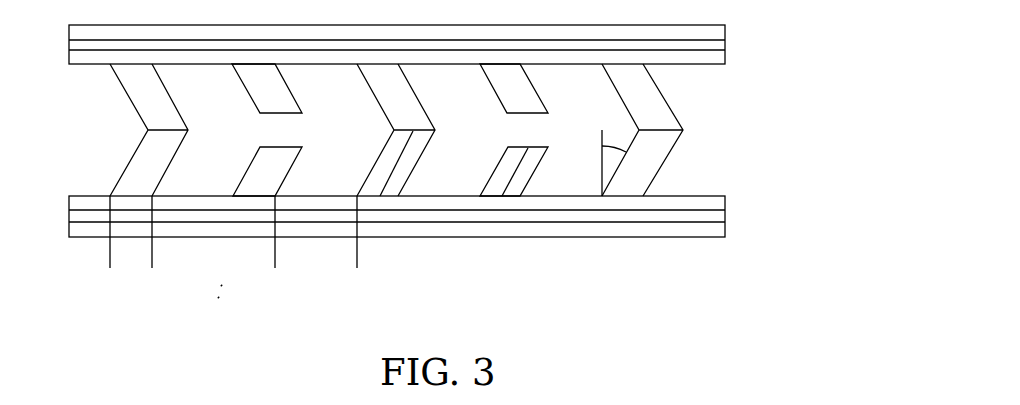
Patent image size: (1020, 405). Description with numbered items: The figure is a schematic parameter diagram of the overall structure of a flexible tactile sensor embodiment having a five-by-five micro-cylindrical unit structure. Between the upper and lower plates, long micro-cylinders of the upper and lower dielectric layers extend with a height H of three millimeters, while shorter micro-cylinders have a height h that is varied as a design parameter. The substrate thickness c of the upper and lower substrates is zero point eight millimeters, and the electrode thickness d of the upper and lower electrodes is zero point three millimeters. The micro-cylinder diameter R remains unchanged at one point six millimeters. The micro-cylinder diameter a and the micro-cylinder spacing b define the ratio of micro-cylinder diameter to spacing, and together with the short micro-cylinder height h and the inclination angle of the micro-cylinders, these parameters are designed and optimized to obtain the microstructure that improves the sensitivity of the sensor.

The micro-cylinder diameter a is at (180, 257).
The micro-cylinder spacing b is at (385, 257).
The substrate thickness c is at (737, 15).
The electrode thickness d is at (737, 205).
The long micro-cylinder height H is at (408, 160).
The short micro-cylinder height h is at (522, 172).
The micro-cylinder diameter R is at (613, 130).